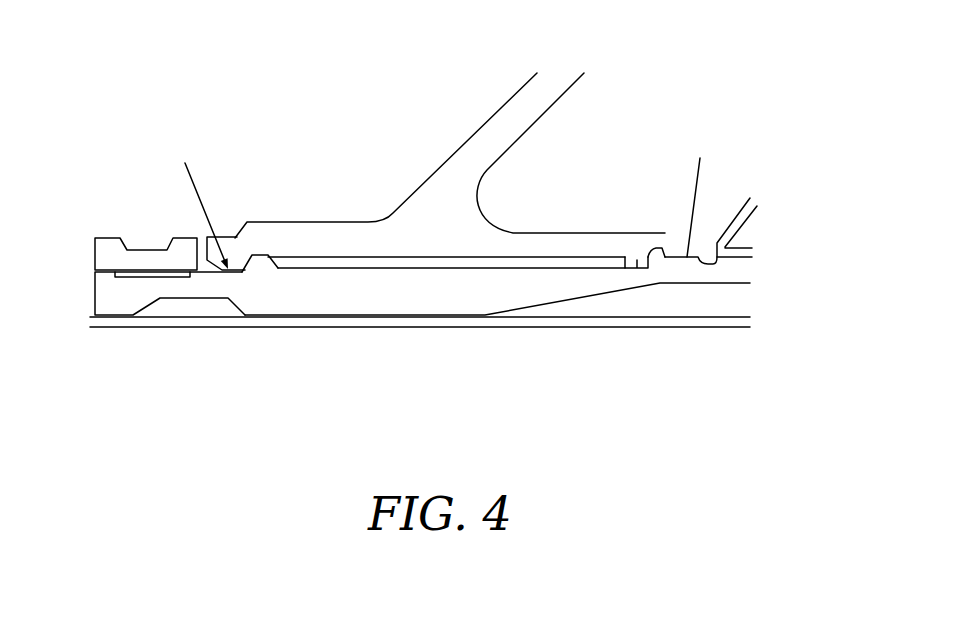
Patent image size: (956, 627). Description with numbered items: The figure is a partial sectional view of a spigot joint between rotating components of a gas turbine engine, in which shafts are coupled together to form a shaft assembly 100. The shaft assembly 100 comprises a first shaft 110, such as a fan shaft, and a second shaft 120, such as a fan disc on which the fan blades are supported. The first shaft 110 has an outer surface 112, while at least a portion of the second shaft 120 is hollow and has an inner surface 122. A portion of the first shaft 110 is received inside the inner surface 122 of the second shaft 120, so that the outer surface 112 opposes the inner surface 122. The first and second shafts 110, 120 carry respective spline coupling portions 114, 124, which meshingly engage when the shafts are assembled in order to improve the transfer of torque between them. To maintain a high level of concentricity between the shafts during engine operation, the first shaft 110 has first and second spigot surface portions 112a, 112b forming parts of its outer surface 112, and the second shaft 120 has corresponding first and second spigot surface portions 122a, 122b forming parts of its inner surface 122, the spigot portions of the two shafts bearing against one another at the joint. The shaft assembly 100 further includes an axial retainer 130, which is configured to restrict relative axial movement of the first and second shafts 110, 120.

The shaft assembly 100 is at (678, 86).
The first shaft 110 is at (705, 283).
The outer surface 112 is at (699, 256).
The first spigot surface portion 112a is at (243, 273).
The second spigot surface portion 112b is at (667, 258).
The spline coupling portion 114 is at (518, 258).
The second shaft 120 is at (384, 221).
The inner surface 122 is at (630, 256).
The first spigot surface portion 122a is at (232, 270).
The second spigot surface portion 122b is at (668, 247).
The spline coupling portion 124 is at (405, 270).
The axial retainer 130 is at (105, 247).